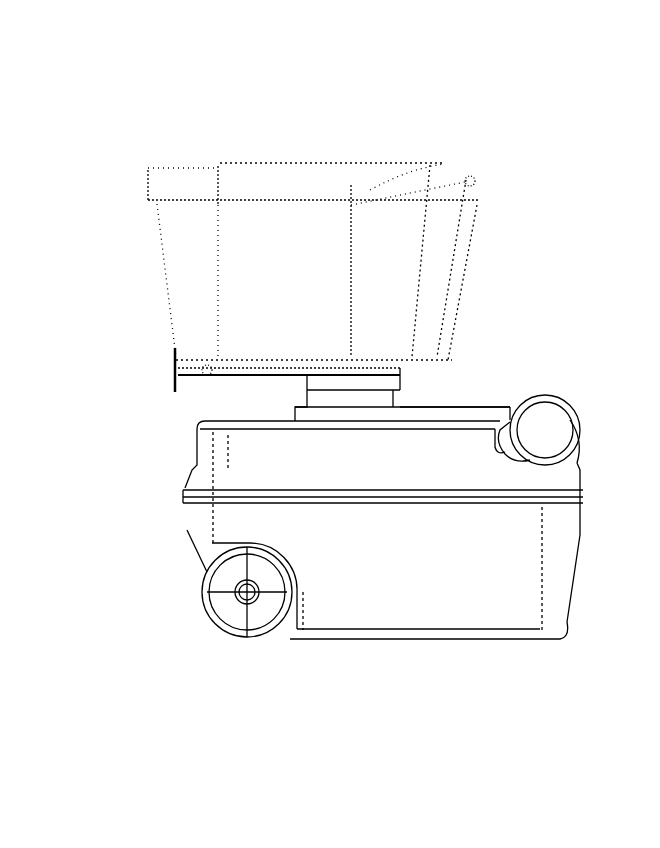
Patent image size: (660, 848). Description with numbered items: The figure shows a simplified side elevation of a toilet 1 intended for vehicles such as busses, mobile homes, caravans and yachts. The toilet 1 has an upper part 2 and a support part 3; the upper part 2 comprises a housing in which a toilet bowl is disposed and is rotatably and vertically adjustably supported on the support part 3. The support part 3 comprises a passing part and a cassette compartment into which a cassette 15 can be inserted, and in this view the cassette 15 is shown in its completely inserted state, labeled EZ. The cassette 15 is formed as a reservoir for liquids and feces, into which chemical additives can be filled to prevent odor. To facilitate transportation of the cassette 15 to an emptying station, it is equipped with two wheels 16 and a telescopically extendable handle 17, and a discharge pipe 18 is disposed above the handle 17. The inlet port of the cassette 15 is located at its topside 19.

The toilet 1 is at (554, 158).
The upper part 2 is at (158, 272).
The support part 3 is at (168, 378).
The cassette 15 is at (592, 530).
The wheels 16 is at (208, 608).
The telescopically extendable handle 17 is at (595, 603).
The discharge pipe 18 is at (539, 430).
The topside 19 is at (506, 400).